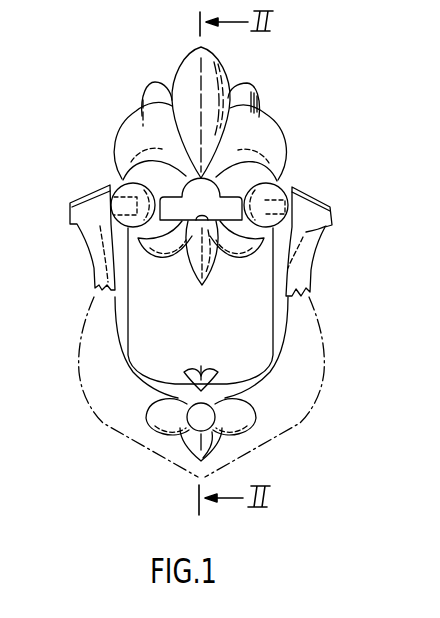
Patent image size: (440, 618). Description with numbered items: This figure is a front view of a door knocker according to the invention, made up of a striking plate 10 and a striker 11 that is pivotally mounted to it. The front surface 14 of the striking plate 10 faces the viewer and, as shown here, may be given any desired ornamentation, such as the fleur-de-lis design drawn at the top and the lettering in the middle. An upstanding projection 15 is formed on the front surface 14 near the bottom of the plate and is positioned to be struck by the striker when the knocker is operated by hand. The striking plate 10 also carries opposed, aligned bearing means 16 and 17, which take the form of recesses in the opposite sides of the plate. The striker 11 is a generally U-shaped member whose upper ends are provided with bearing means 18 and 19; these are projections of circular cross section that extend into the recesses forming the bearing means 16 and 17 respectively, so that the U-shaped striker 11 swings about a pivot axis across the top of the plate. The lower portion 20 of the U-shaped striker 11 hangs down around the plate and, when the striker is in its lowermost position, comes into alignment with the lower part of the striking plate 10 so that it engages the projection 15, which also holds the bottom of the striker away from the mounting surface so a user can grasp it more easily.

The striking plate 10 is at (268, 136).
The striker 11 is at (308, 270).
The front surface 14 is at (149, 107).
The upstanding projection 15 is at (206, 430).
The bearing means 16 is at (275, 188).
The bearing means 17 is at (121, 188).
The bearing means 18 is at (293, 203).
The bearing means 19 is at (111, 202).
The lower portion 20 is at (136, 428).